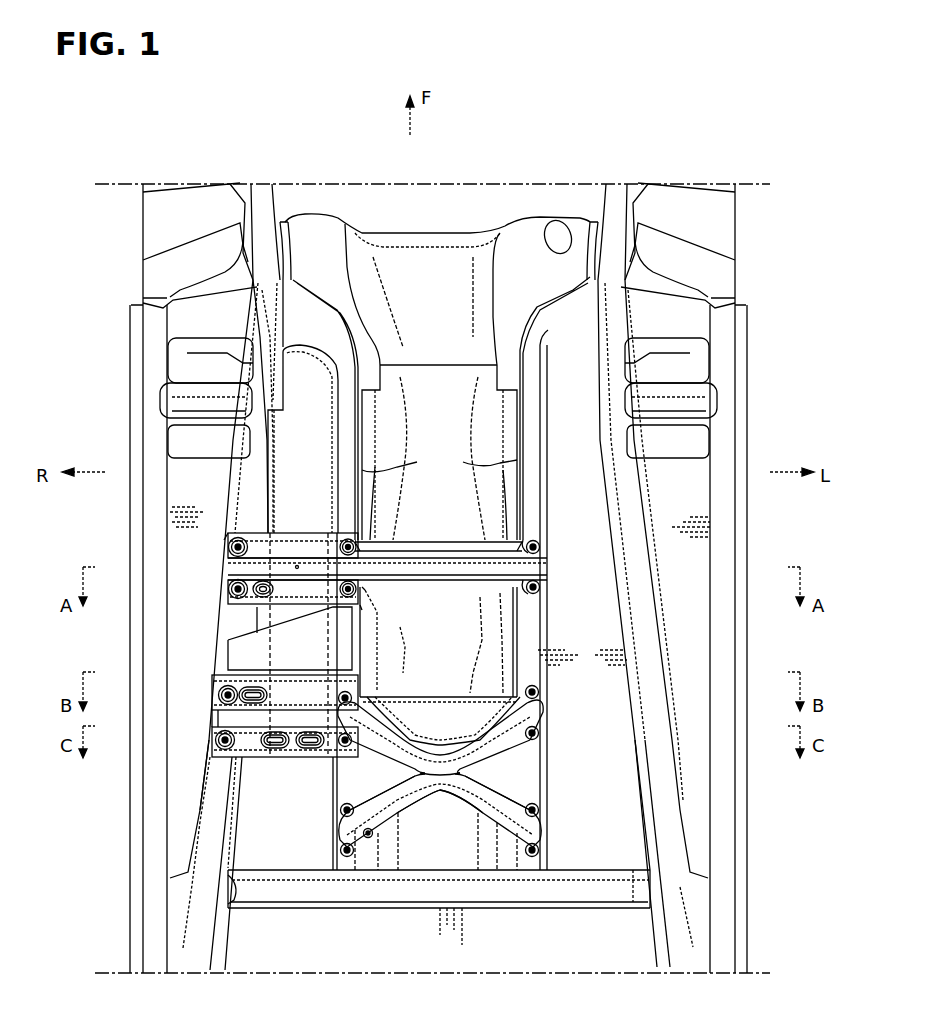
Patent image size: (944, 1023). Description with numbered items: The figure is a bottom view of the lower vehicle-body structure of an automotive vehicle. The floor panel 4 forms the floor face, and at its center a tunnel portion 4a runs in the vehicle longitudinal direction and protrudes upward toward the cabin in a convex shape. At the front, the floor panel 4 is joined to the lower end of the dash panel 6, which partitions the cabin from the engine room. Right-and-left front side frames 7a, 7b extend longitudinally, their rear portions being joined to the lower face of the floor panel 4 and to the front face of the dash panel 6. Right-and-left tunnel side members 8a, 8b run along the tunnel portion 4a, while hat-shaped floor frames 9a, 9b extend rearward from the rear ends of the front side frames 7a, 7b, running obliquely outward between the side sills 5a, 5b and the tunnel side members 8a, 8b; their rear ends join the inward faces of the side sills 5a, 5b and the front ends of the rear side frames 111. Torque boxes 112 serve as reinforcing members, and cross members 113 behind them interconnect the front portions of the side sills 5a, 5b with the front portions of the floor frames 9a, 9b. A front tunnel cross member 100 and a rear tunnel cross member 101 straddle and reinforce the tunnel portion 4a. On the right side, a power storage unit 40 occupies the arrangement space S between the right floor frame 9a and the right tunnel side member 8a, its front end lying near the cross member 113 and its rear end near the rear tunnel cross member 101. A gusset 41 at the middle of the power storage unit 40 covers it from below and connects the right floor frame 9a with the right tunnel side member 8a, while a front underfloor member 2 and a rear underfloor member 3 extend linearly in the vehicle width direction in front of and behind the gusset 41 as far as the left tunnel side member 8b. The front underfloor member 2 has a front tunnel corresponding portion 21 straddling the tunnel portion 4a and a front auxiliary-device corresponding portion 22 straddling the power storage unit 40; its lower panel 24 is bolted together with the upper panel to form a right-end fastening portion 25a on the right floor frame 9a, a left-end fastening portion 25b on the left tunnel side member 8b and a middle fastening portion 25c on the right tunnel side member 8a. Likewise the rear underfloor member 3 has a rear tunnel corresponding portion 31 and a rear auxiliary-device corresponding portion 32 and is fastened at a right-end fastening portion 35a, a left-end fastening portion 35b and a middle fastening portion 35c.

The front underfloor member 2 is at (546, 588).
The rear underfloor member 3 is at (548, 712).
The floor panel 4 is at (700, 497).
The tunnel portion 4a is at (445, 413).
The right side sill 5a is at (130, 812).
The left side sill 5b is at (748, 812).
The dash panel 6 is at (360, 232).
The right front side frame 7a is at (299, 184).
The left front side frame 7b is at (599, 184).
The right tunnel side member 8a is at (400, 497).
The left tunnel side member 8b is at (479, 497).
The right floor frame 9a is at (230, 497).
The left floor frame 9b is at (608, 500).
The front tunnel corresponding portion 21 is at (467, 550).
The front auxiliary-device corresponding portion 22 is at (286, 535).
The lower panel 24 is at (530, 567).
The right-end fastening portion 25a is at (228, 536).
The left-end fastening portion 25b is at (540, 549).
The middle fastening portion 25c is at (365, 598).
The rear tunnel corresponding portion 31 is at (407, 810).
The rear auxiliary-device corresponding portion 32 is at (315, 757).
The right-end fastening portion 35a is at (212, 678).
The left-end fastening portion 35b is at (533, 805).
The middle fastening portion 35c is at (343, 807).
The power storage unit 40 is at (312, 463).
The gusset 41 is at (312, 651).
The front tunnel cross member 100 is at (422, 593).
The rear tunnel cross member 101 is at (428, 687).
The rear side frame 111 is at (228, 942).
The torque box 112 is at (187, 352).
The cross member 113 is at (177, 433).
The power-storage-unit arrangement space S is at (262, 613).